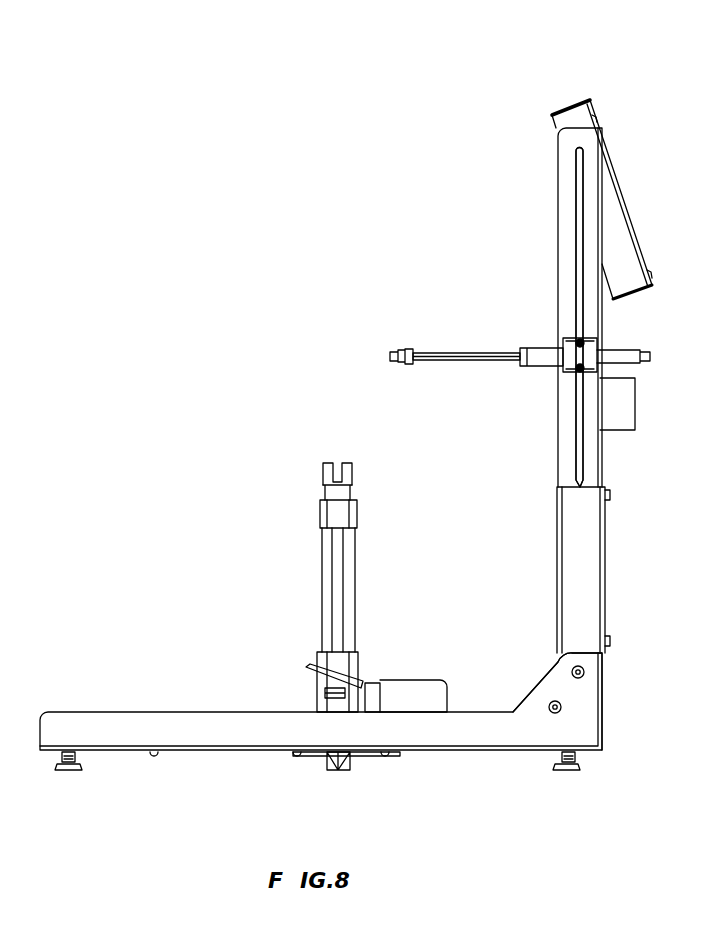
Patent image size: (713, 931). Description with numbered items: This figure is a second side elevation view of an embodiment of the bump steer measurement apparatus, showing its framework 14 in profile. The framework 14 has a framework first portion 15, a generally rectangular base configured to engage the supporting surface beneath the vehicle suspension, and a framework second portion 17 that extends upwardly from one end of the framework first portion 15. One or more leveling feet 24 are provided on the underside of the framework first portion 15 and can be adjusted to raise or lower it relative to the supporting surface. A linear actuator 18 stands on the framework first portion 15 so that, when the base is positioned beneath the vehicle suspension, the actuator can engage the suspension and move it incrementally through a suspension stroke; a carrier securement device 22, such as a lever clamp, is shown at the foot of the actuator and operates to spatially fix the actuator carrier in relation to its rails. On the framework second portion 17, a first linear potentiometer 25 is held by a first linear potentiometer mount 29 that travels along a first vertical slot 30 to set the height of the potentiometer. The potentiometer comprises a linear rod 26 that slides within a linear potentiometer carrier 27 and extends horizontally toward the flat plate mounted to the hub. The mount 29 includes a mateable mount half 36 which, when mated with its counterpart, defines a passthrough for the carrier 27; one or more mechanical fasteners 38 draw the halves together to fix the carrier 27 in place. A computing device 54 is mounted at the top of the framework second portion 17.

The framework 14 is at (606, 712).
The framework first portion 15 is at (448, 735).
The framework second portion 17 is at (610, 553).
The linear actuator 18 is at (352, 500).
The carrier securement device 22 is at (368, 705).
The leveling feet 24 is at (68, 772).
The first linear potentiometer 25 is at (388, 356).
The linear rod 26 is at (457, 360).
The linear potentiometer carrier 27 is at (540, 366).
The first linear potentiometer mount 29 is at (600, 341).
The first vertical slot 30 is at (578, 152).
The mateable mount half 36 is at (588, 362).
The mechanical fasteners 38 is at (568, 338).
The computing device 54 is at (564, 108).